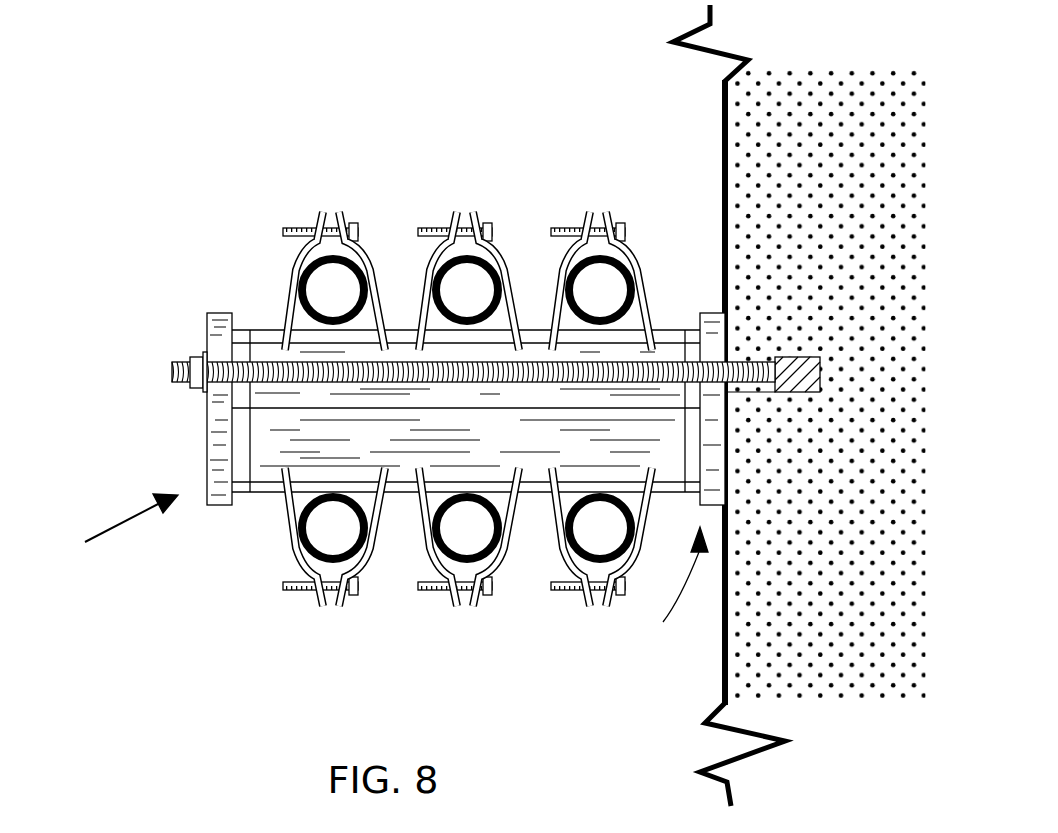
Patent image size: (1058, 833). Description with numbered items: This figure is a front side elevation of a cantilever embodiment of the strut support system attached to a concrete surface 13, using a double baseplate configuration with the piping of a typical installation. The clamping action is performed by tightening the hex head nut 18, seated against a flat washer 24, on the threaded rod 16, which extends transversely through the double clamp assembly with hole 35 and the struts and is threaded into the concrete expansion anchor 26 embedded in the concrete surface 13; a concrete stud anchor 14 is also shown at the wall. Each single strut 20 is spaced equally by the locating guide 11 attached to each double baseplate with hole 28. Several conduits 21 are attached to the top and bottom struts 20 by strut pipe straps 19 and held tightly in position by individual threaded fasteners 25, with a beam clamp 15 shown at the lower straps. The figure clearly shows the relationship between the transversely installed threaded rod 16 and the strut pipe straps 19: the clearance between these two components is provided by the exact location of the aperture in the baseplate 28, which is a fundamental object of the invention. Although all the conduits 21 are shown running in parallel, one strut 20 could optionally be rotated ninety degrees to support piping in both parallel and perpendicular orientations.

The locating guide 11 is at (243, 420).
The concrete surface 13 is at (800, 185).
The concrete stud anchor 14 is at (713, 322).
The beam clamp 15 is at (501, 586).
The threaded rod 16 is at (172, 371).
The hex head nut 18 is at (192, 362).
The strut pipe strap 19 is at (289, 310).
The single strut 20 is at (266, 462).
The conduit 21 is at (310, 265).
The flat washer 24 is at (204, 356).
The threaded fastener 25 is at (300, 230).
The concrete expansion anchor 26 is at (794, 360).
The double baseplate with hole 28 is at (214, 462).
The double clamp assembly with hole 35 is at (375, 579).